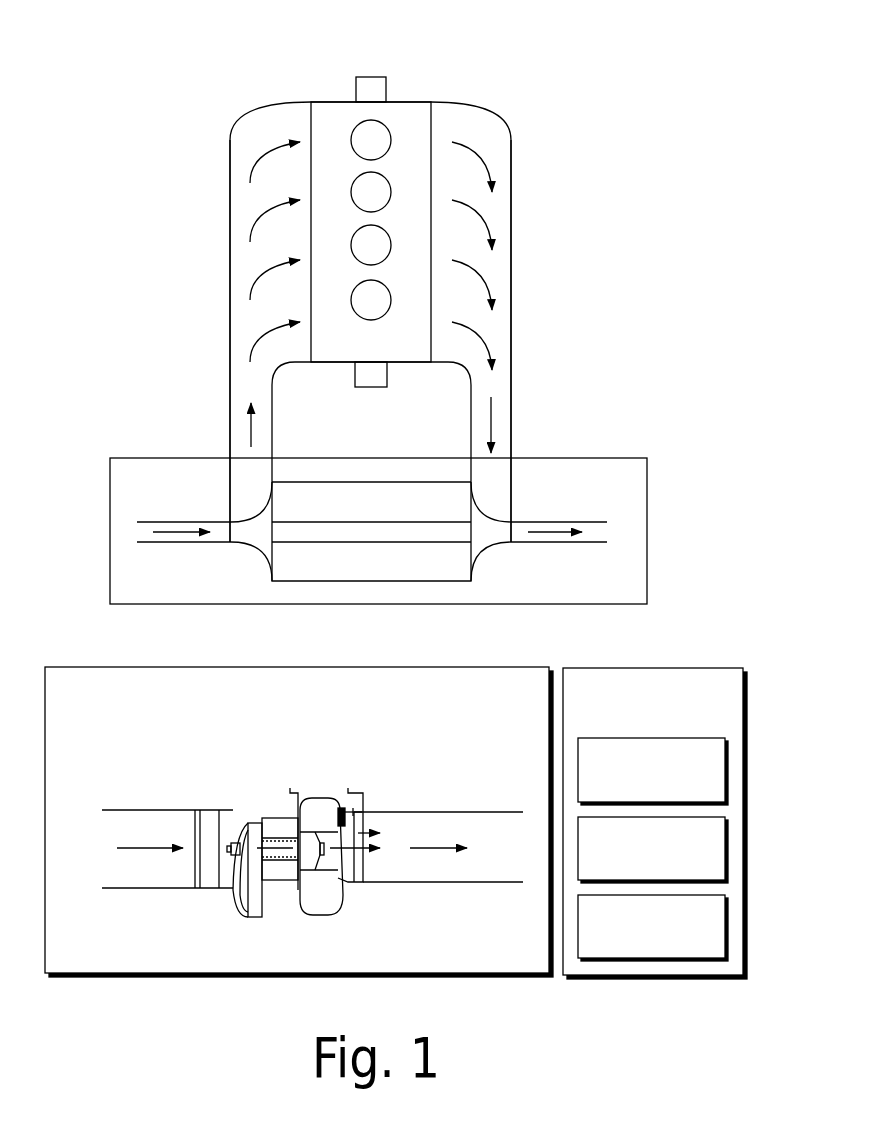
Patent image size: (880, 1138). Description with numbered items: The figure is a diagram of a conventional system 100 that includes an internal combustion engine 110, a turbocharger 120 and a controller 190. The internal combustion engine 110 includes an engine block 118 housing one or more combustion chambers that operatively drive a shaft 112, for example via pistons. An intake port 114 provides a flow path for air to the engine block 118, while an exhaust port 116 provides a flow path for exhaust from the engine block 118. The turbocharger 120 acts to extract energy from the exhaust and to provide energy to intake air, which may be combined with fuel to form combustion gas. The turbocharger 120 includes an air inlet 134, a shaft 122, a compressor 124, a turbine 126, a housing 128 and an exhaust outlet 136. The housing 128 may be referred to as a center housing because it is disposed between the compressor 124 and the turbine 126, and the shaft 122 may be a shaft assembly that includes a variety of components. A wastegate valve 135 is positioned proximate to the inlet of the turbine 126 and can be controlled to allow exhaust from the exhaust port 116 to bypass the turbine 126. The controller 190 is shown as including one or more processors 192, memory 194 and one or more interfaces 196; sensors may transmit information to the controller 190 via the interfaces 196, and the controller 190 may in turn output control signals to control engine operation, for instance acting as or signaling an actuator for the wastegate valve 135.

The system 100 is at (506, 40).
The internal combustion engine 110 is at (340, 100).
The shaft 112 is at (368, 77).
The intake port 114 is at (247, 120).
The exhaust port 116 is at (507, 130).
The engine block 118 is at (388, 358).
The turbocharger 120 is at (560, 458).
The shaft 122 is at (369, 543).
The compressor 124 is at (253, 555).
The turbine 126 is at (487, 547).
The housing 128 is at (390, 510).
The air inlet 134 is at (200, 520).
The wastegate valve 135 is at (347, 808).
The exhaust outlet 136 is at (560, 520).
The controller 190 is at (638, 729).
The processors 192 is at (636, 791).
The memory 194 is at (636, 869).
The interfaces 196 is at (636, 946).